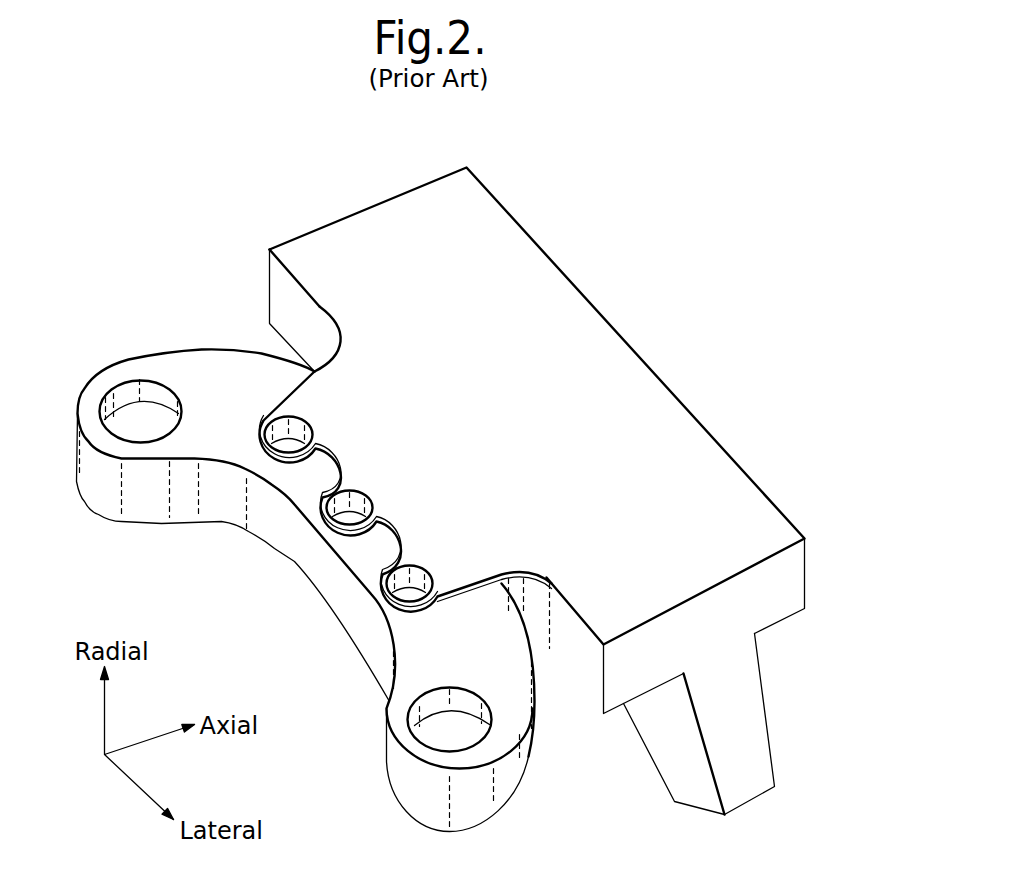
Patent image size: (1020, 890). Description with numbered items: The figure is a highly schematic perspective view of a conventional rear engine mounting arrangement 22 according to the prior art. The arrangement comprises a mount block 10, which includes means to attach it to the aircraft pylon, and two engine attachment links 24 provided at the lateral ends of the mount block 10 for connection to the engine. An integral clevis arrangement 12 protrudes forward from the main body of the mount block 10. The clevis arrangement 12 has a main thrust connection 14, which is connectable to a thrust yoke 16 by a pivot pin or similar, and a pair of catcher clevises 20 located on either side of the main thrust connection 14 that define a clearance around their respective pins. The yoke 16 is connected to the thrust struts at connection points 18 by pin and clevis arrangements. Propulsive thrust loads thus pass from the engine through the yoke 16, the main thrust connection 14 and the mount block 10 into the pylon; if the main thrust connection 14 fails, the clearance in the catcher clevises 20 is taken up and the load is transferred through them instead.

The mount block 10 is at (627, 388).
The clevis arrangement 12 is at (449, 562).
The main thrust connection 14 is at (322, 518).
The thrust yoke 16 is at (140, 507).
The connection points 18 is at (132, 420).
The catcher clevises 20 is at (260, 428).
The rear engine mounting arrangement 22 is at (180, 252).
The engine attachment links 24 is at (267, 330).